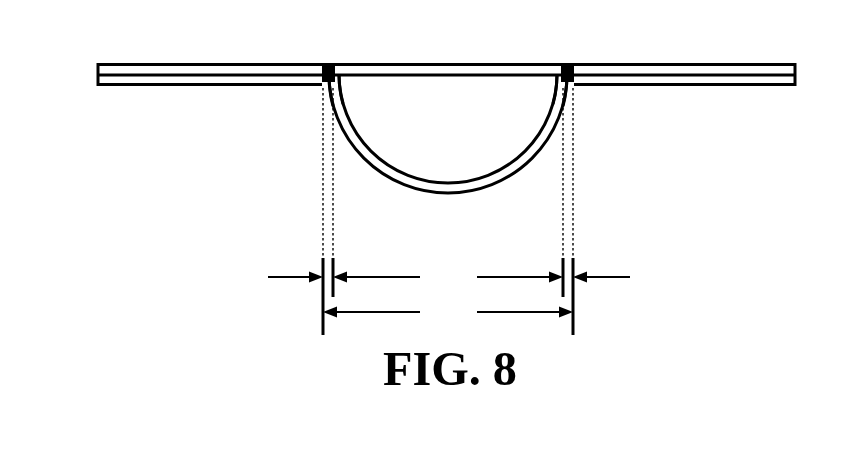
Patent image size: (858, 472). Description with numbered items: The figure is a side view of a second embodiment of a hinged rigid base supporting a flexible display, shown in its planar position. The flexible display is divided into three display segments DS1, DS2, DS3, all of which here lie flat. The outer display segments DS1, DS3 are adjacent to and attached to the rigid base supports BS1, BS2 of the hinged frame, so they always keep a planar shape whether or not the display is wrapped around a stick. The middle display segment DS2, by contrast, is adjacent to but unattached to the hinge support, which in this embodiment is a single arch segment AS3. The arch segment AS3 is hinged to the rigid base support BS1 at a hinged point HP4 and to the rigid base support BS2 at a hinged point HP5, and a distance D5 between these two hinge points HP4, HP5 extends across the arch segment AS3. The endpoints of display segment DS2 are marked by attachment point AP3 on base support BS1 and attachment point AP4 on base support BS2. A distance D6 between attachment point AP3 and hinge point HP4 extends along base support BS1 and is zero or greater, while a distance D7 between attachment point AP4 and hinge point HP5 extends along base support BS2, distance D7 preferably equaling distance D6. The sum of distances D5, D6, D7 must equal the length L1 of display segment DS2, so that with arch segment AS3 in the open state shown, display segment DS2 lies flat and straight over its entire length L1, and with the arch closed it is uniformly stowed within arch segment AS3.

The display segment DS1 is at (190, 64).
The display segment DS2 is at (447, 61).
The display segment DS3 is at (703, 61).
The rigid base support BS1 is at (190, 89).
The rigid base support BS2 is at (703, 88).
The attachment point AP3 is at (333, 61).
The attachment point AP4 is at (567, 61).
The hinged point HP4 is at (324, 88).
The hinged point HP5 is at (573, 88).
The arch segment AS3 is at (450, 192).
The distance D5 is at (448, 277).
The distance D6 is at (275, 296).
The distance D7 is at (621, 277).
The length L1 is at (448, 296).